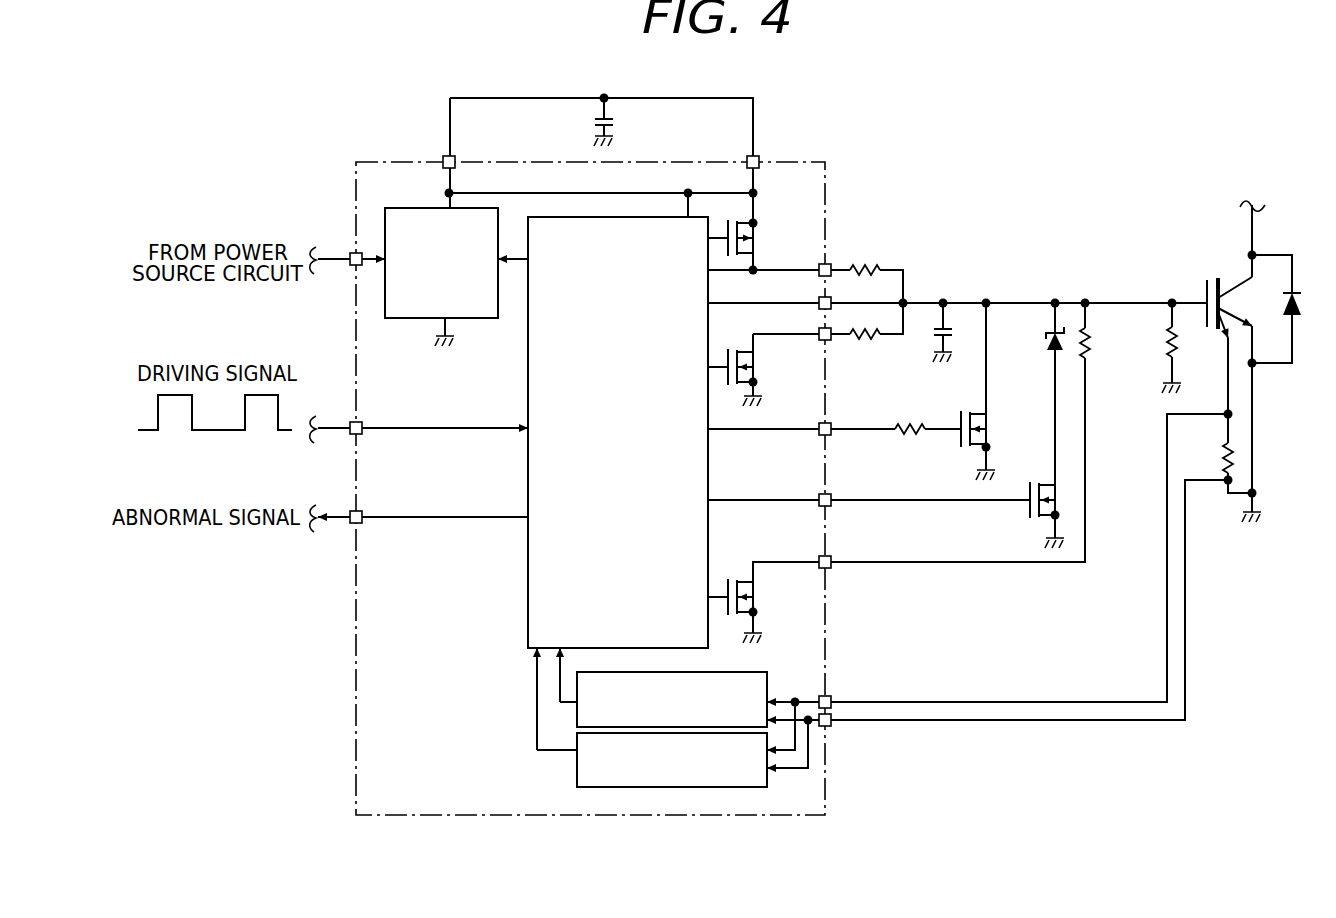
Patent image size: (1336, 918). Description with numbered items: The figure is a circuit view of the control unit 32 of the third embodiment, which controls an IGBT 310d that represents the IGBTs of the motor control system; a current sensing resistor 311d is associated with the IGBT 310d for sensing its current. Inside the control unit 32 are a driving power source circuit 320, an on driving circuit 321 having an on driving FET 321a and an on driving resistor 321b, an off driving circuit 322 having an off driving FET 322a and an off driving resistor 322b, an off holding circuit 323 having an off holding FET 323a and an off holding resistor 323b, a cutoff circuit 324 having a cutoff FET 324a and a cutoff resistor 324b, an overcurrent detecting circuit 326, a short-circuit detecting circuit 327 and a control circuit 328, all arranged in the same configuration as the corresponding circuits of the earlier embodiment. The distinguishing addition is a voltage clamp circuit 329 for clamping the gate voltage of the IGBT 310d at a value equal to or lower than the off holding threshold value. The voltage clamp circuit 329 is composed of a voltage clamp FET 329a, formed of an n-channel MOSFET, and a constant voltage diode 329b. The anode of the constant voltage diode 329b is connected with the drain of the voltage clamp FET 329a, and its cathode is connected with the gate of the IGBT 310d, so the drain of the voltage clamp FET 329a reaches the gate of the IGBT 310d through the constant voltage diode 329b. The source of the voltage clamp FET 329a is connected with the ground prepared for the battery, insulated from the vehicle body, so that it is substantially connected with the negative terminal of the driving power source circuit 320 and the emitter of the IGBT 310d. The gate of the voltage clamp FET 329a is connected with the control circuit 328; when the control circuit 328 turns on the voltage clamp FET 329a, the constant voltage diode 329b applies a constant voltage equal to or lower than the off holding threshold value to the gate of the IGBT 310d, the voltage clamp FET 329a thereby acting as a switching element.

The control unit 32 is at (863, 95).
The driving power source circuit 320 is at (402, 318).
The on driving circuit 321 is at (806, 251).
The on driving FET 321a is at (789, 221).
The on driving resistor 321b is at (867, 261).
The off driving circuit 322 is at (810, 373).
The off driving FET 322a is at (789, 363).
The off driving resistor 322b is at (865, 346).
The off holding circuit 323 is at (875, 398).
The off holding FET 323a is at (990, 424).
The off holding resistor 323b is at (902, 439).
The cutoff circuit 324 is at (922, 473).
The cutoff FET 324a is at (789, 594).
The cutoff resistor 324b is at (1093, 338).
The overcurrent detecting circuit 326 is at (763, 672).
The short-circuit detecting circuit 327 is at (577, 766).
The control circuit 328 is at (527, 406).
The voltage clamp circuit 329 is at (886, 430).
The voltage clamp FET 329a is at (1025, 507).
The constant voltage diode 329b is at (1044, 342).
The IGBT 310d is at (1214, 278).
The current sensing resistor 311d is at (1220, 461).